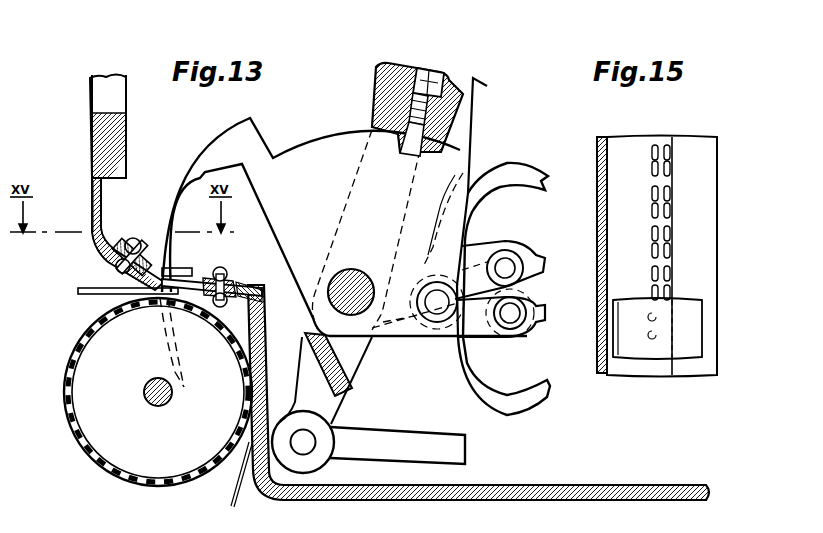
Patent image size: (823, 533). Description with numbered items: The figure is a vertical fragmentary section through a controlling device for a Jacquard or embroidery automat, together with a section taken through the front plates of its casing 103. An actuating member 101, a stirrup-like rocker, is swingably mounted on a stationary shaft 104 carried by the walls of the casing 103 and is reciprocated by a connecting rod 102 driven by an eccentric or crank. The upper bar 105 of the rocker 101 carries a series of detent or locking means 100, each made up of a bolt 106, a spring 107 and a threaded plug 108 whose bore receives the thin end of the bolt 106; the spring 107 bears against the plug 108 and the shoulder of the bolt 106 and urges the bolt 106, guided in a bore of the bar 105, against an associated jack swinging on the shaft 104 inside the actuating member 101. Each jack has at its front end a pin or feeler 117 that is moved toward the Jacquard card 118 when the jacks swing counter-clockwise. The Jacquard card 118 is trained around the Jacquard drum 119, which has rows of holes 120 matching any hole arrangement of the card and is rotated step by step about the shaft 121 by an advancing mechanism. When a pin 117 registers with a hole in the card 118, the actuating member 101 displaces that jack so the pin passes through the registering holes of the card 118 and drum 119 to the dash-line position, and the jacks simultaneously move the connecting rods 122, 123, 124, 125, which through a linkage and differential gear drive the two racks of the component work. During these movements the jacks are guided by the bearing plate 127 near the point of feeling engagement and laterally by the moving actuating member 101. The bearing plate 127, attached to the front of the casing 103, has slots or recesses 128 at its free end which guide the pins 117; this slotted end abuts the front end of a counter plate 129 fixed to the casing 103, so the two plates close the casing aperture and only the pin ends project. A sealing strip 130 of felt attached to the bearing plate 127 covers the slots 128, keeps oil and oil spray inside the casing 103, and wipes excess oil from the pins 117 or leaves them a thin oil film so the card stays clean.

In FIG. 13, the detent or locking means 100 is at (401, 133).
In FIG. 13, the actuating member 101 is at (361, 193).
In FIG. 13, the connecting rod 102 is at (467, 457).
In FIG. 13, the casing 103 is at (106, 104).
In FIG. 13, the shaft 104 is at (369, 306).
In FIG. 13, the upper bar 105 is at (412, 66).
In FIG. 13, the bolt 106 is at (433, 140).
In FIG. 13, the spring 107 is at (478, 83).
In FIG. 13, the threaded plug 108 is at (451, 82).
In FIG. 13, the pin or feeler 117 is at (176, 194).
In FIG. 13, the Jacquard card 118 is at (86, 289).
In FIG. 13, the Jacquard drum 119 is at (87, 454).
In FIG. 13, the rows of holes 120 is at (184, 476).
In FIG. 13, the shaft 121 is at (159, 406).
In FIG. 13, the connecting rod 122 is at (541, 184).
In FIG. 13, the connecting rod 123 is at (541, 259).
In FIG. 13, the connecting rod 124 is at (541, 313).
In FIG. 13, the connecting rod 125 is at (546, 395).
In FIG. 13, the bearing plate 127 is at (92, 218).
In FIG. 15, the bearing plate 127 is at (623, 170).
In FIG. 13, the slots or recesses 128 is at (152, 290).
In FIG. 15, the slots or recesses 128 is at (659, 150).
In FIG. 13, the counter plate 129 is at (197, 280).
In FIG. 15, the counter plate 129 is at (707, 195).
In FIG. 13, the sealing strip 130 is at (185, 268).
In FIG. 15, the sealing strip 130 is at (630, 338).